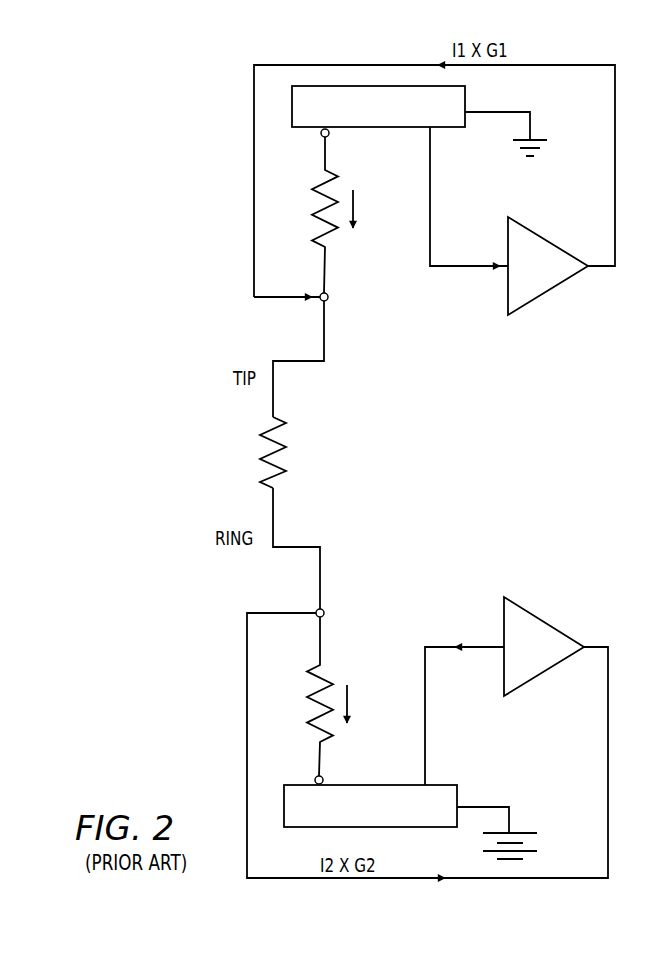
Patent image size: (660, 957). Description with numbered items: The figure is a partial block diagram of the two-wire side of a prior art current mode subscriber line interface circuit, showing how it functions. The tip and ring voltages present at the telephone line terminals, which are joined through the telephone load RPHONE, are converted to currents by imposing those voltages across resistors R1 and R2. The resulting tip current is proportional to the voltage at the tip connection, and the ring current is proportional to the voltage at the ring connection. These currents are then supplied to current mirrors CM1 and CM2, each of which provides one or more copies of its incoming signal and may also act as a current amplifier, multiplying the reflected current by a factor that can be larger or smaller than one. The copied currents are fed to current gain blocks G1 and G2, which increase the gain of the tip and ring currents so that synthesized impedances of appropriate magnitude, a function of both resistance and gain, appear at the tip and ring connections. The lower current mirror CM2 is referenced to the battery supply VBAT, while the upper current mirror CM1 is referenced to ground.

The current mirror CM1 is at (419, 121).
The current mirror CM2 is at (396, 808).
The resistor R1 is at (329, 219).
The resistor R2 is at (323, 696).
The telephone load resistance RPHONE is at (232, 452).
The current gain block G1 is at (521, 266).
The current gain block G2 is at (515, 646).
The battery voltage source VBAT is at (529, 848).